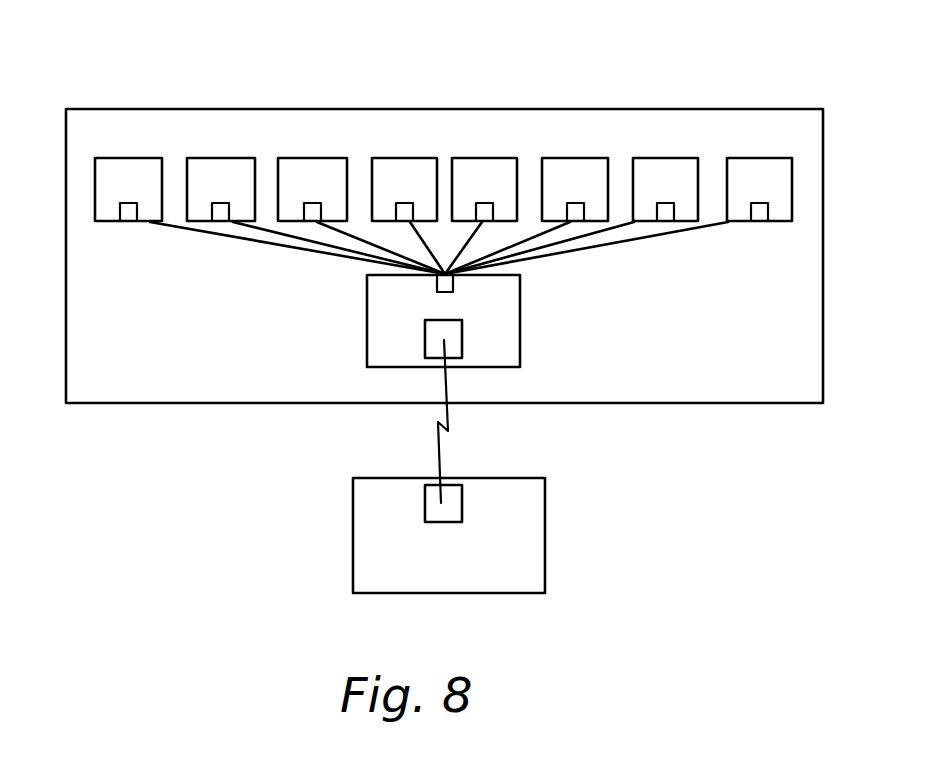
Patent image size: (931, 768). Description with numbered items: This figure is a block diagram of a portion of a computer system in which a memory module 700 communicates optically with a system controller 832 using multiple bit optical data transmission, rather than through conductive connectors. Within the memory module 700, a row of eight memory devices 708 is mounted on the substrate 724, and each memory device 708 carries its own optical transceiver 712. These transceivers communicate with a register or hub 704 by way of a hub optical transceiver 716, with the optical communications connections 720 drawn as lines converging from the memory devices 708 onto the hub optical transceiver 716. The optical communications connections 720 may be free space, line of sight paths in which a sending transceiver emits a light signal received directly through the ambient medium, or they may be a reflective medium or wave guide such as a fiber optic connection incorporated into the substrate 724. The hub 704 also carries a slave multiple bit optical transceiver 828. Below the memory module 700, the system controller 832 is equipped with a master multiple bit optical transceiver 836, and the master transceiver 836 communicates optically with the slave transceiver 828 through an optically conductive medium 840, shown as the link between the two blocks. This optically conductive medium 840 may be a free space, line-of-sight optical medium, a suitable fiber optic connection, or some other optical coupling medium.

The memory module 700 is at (564, 82).
The register or hub 704 is at (520, 335).
The memory devices 708 is at (745, 158).
The optical transceiver 712 is at (627, 229).
The hub optical transceiver 716 is at (437, 285).
The optical communications connections 720 is at (273, 243).
The substrate 724 is at (765, 404).
The slave multiple bit optical transceiver 828 is at (425, 340).
The system controller 832 is at (353, 528).
The master multiple bit optical transceiver 836 is at (462, 505).
The optically conductive medium 840 is at (438, 426).